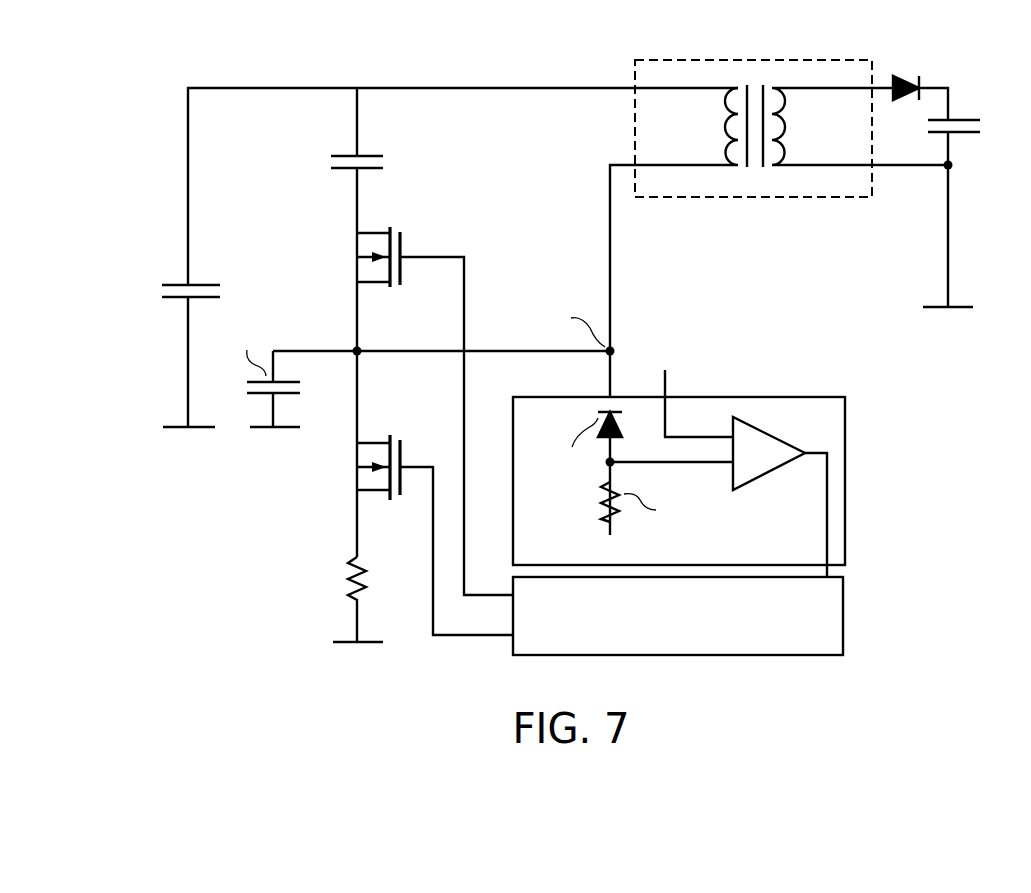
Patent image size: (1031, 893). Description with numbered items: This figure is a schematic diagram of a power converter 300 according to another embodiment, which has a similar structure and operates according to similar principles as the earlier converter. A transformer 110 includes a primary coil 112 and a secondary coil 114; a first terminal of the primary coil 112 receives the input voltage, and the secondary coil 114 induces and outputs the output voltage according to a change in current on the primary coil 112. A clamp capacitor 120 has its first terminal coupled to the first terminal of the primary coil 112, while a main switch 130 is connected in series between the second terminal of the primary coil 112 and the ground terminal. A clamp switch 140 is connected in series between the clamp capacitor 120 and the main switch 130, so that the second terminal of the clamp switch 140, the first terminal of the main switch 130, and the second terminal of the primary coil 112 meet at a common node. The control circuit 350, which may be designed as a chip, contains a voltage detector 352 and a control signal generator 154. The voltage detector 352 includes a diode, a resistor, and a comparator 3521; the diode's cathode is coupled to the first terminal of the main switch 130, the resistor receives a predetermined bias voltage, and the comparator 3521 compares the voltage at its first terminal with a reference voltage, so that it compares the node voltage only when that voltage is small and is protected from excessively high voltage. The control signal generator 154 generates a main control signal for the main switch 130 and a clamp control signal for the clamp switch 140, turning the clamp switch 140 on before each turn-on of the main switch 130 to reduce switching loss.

The power converter 300 is at (122, 148).
The transformer 110 is at (757, 197).
The primary coil 112 is at (722, 134).
The secondary coil 114 is at (790, 115).
The clamp capacitor 120 is at (340, 164).
The main switch 130 is at (355, 484).
The clamp switch 140 is at (353, 244).
The control circuit 350 is at (943, 480).
The voltage detector 352 is at (846, 465).
The comparator 3521 is at (757, 433).
The control signal generator 154 is at (845, 605).